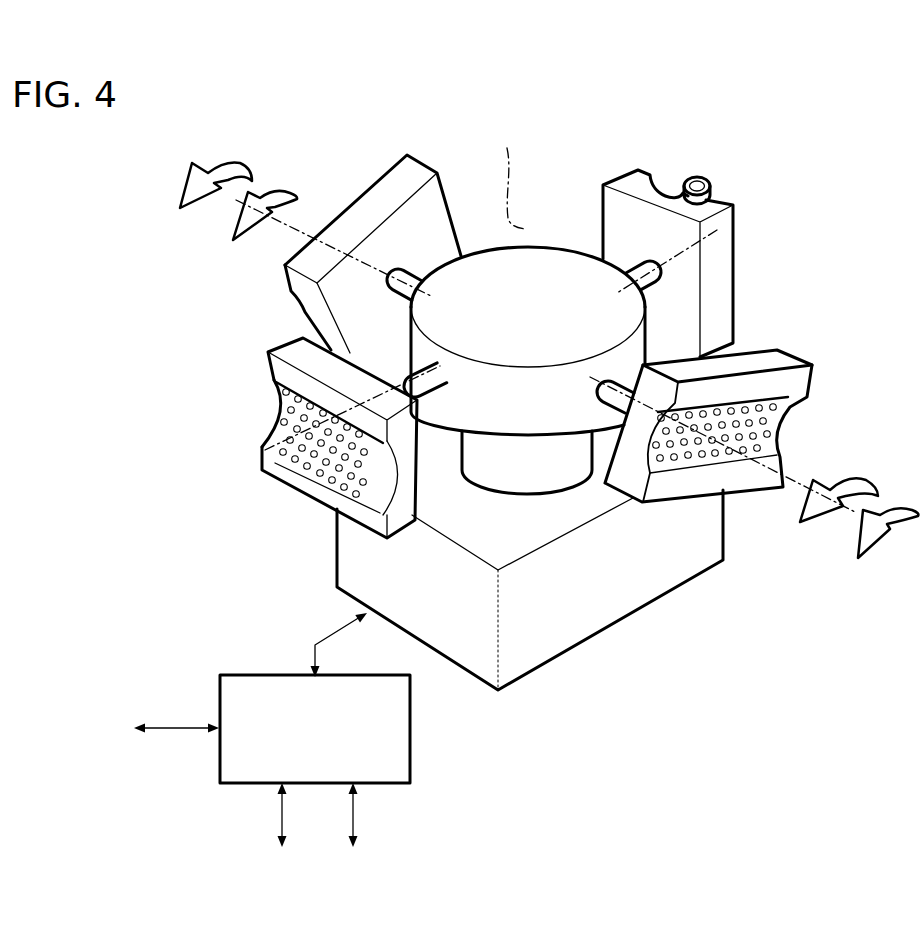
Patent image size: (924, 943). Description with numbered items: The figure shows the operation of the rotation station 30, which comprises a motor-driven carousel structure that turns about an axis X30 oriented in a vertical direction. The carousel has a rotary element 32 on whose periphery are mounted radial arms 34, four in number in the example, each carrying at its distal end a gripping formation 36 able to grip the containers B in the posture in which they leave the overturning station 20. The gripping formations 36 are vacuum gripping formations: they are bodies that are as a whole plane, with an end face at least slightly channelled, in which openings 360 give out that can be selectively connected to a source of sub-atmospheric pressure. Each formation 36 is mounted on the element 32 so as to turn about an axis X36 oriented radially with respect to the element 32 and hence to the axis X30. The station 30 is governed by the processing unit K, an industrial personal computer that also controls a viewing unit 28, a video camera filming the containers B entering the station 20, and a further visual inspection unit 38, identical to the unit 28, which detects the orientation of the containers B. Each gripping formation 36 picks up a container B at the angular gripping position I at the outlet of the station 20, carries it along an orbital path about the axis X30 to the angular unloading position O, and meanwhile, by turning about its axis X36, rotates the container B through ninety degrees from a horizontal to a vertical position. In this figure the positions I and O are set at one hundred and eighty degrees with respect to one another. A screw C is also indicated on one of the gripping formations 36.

The rotation station 30 is at (579, 150).
The rotary element 32 is at (550, 272).
The radial arms 34 is at (414, 300).
The gripping formations 36 is at (352, 184).
The openings 360 is at (352, 468).
The axis of rotation X30 is at (500, 173).
The axis of rotation of gripping formation X36 is at (305, 234).
The angular unloading position O is at (658, 147).
The containers B is at (715, 169).
The screw C is at (712, 186).
The angular gripping position I is at (298, 532).
The processing unit K is at (400, 733).
The overturning station 20 is at (172, 732).
The viewing unit 28 is at (282, 833).
The visual inspection unit 38 is at (357, 833).